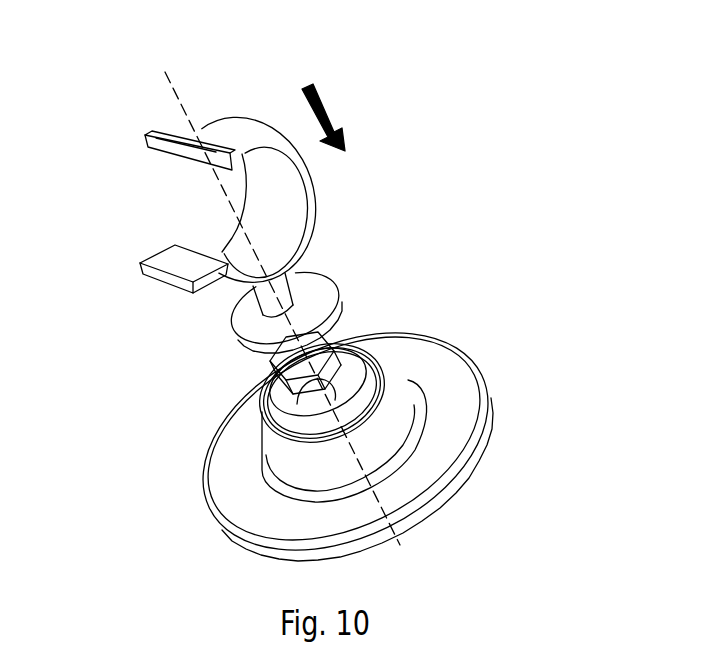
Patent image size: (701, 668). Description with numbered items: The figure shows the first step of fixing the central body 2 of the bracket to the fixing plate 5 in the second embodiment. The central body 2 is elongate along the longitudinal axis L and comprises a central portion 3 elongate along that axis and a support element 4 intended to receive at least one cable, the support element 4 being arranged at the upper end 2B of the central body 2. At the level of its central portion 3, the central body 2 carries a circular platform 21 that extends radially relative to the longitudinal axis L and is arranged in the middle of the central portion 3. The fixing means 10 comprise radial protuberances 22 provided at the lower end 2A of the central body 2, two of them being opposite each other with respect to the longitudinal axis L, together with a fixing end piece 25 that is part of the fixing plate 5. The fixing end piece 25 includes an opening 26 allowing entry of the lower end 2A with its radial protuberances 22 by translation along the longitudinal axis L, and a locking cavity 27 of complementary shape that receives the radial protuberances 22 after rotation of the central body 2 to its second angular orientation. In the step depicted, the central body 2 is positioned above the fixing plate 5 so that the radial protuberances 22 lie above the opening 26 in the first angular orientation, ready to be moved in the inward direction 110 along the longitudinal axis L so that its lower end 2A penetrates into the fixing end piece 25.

The longitudinal axis L is at (167, 73).
The central body 2 is at (215, 198).
The lower end 2A is at (263, 324).
The upper end 2B is at (249, 113).
The central portion 3 is at (238, 304).
The support element 4 is at (160, 258).
The fixing plate 5 is at (450, 432).
The fixing means 10 is at (331, 415).
The platform 21 is at (243, 323).
The radial protuberances 22 is at (265, 378).
The fixing end piece 25 is at (396, 398).
The opening 26 is at (394, 397).
The locking cavity 27 is at (430, 333).
The inward direction 110 is at (337, 112).